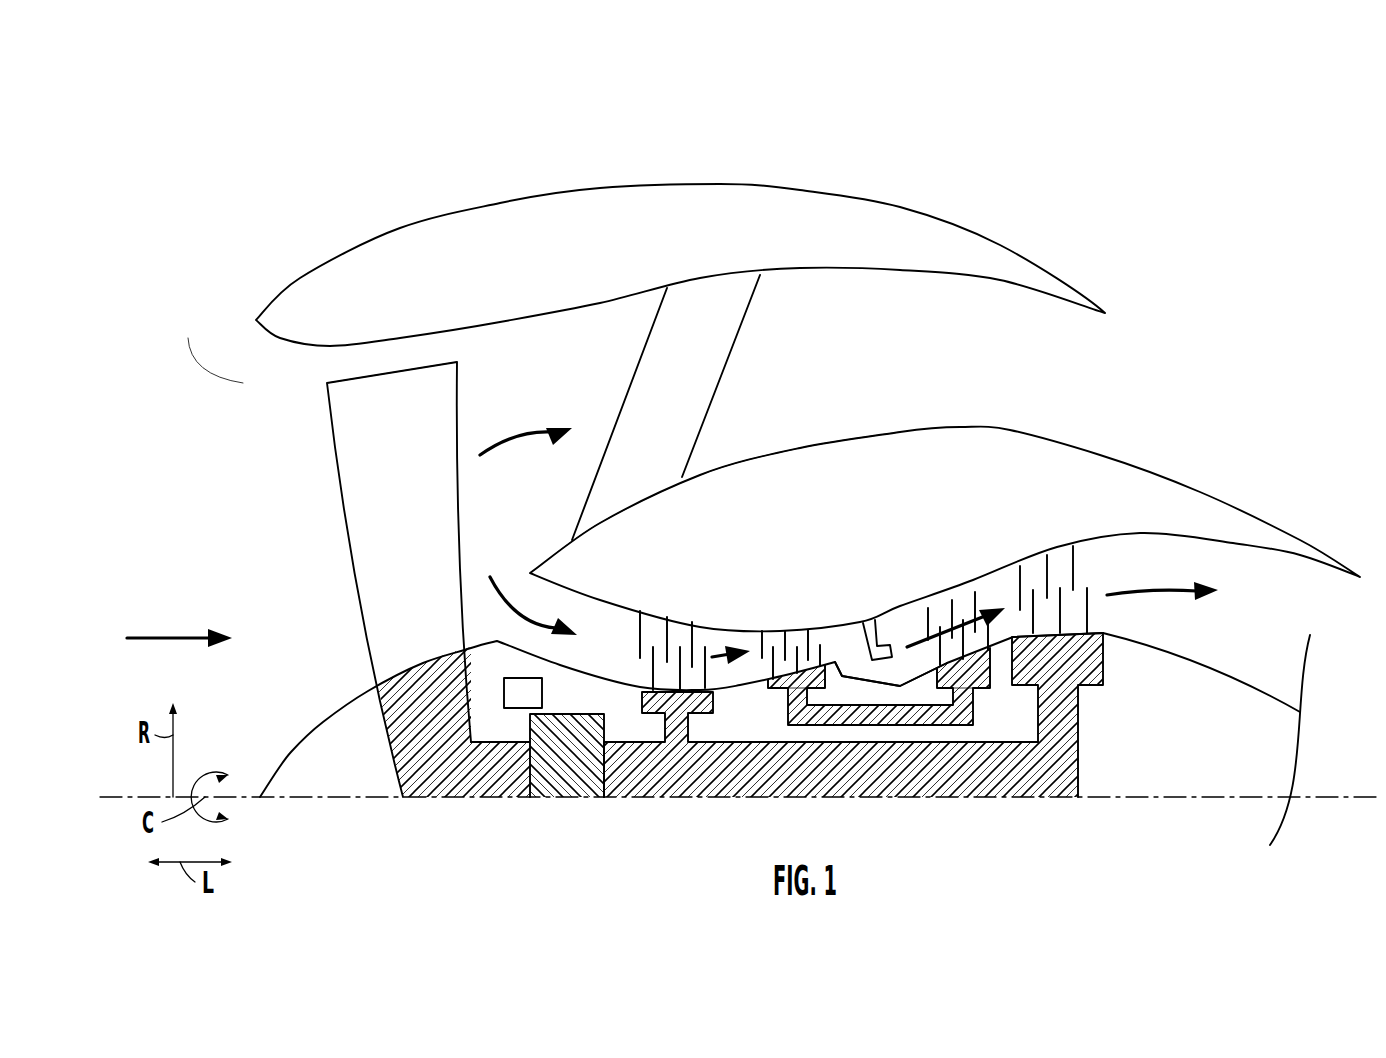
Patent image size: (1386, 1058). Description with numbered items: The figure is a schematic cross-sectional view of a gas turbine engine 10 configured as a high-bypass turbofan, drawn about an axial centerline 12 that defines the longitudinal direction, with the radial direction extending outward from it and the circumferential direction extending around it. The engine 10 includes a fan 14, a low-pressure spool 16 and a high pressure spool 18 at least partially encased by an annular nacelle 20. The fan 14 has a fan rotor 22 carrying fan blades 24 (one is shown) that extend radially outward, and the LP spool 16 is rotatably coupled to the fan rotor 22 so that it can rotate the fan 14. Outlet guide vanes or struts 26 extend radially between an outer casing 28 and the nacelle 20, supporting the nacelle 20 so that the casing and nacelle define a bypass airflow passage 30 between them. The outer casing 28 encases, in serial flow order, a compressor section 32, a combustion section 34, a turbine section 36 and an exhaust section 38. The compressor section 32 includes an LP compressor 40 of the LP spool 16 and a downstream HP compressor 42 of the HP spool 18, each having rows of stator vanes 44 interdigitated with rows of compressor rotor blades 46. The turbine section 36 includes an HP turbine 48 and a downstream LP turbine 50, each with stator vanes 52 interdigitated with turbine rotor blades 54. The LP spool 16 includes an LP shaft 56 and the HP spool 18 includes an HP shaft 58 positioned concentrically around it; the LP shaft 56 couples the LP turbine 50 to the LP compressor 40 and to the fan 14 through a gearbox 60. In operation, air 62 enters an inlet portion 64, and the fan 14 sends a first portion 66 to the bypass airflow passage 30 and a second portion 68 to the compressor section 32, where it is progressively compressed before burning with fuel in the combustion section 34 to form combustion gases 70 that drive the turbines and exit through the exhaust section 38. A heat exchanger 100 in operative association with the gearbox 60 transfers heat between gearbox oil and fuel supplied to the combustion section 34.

The gas turbine engine 10 is at (290, 138).
The axial centerline 12 is at (1185, 797).
The fan 14 is at (310, 463).
The low-pressure (LP) spool 16 is at (668, 812).
The high pressure (HP) spool 18 is at (955, 740).
The annular nacelle 20 is at (375, 238).
The fan rotor 22 is at (323, 725).
The fan blades 24 is at (338, 575).
The outlet guide vanes or struts 26 is at (638, 362).
The outer casing 28 is at (1017, 428).
The bypass airflow passage 30 is at (815, 368).
The compressor section 32 is at (738, 598).
The combustion section 34 is at (866, 598).
The turbine section 36 is at (978, 557).
The exhaust section 38 is at (1287, 611).
The low-pressure (LP) compressor 40 is at (660, 598).
The high-pressure (HP) compressor 42 is at (788, 605).
The stator vanes 44 is at (640, 640).
The compressor rotor blades 46 is at (707, 647).
The high-pressure (HP) turbine 48 is at (937, 583).
The low-pressure (LP) turbine 50 is at (1063, 530).
The stator vanes 52 is at (927, 627).
The turbine rotor blades 54 is at (992, 640).
The low-pressure (LP) shaft 56 is at (752, 780).
The high pressure (HP) shaft 58 is at (935, 728).
The gearbox 60 is at (575, 773).
The air 62 is at (160, 640).
The inlet portion 64 is at (243, 383).
The first portion of the air 66 is at (523, 437).
The second portion of the air 68 is at (513, 597).
The combustion gases 70 is at (997, 590).
The heat exchanger 100 is at (505, 708).